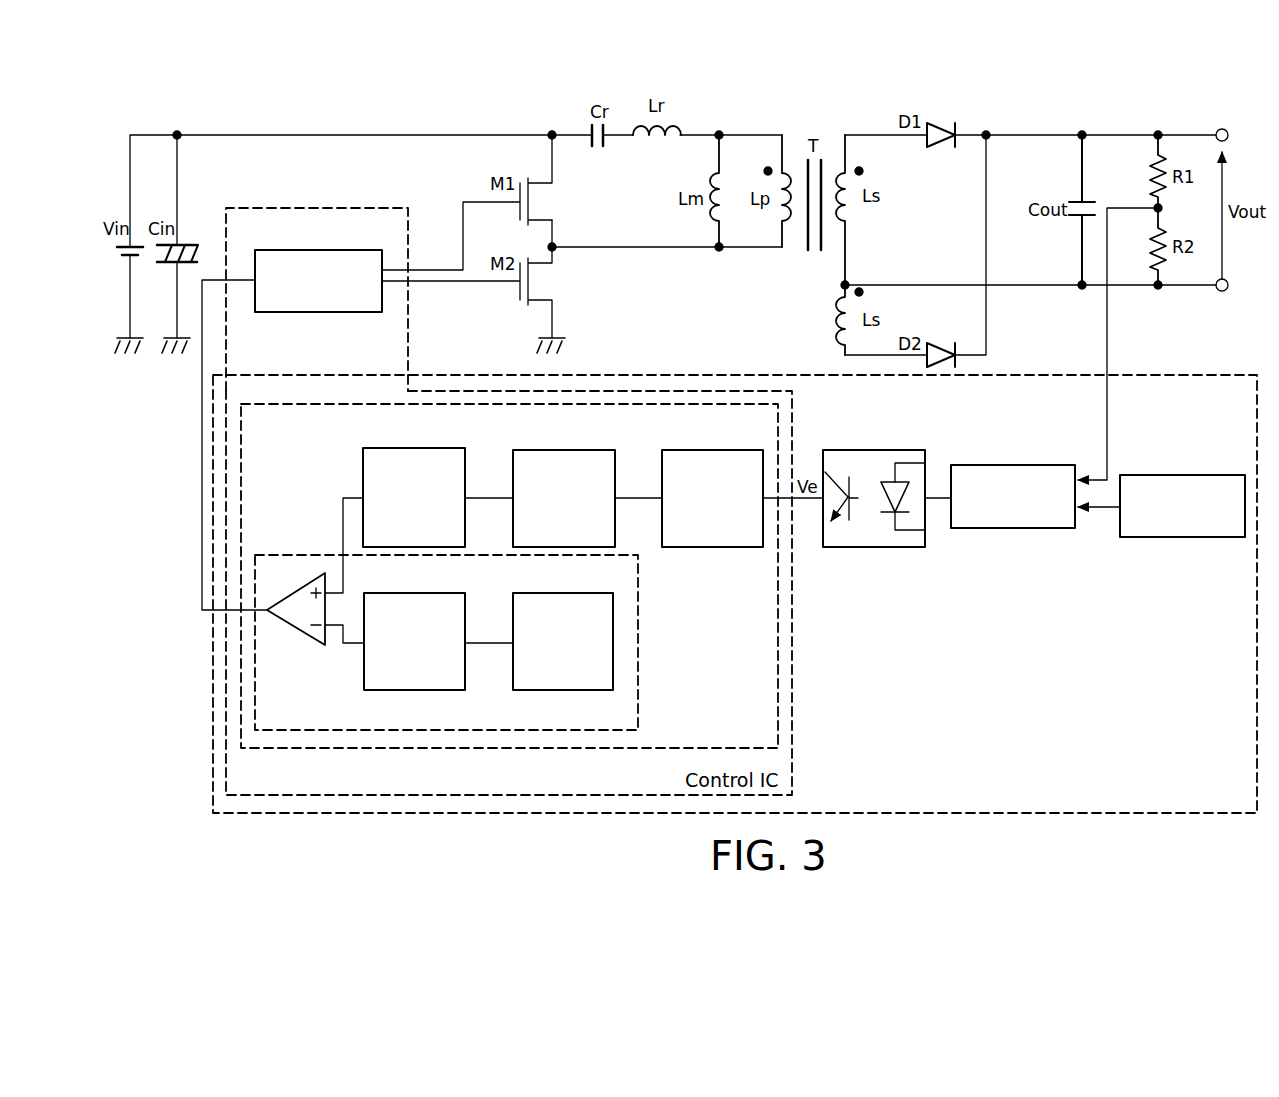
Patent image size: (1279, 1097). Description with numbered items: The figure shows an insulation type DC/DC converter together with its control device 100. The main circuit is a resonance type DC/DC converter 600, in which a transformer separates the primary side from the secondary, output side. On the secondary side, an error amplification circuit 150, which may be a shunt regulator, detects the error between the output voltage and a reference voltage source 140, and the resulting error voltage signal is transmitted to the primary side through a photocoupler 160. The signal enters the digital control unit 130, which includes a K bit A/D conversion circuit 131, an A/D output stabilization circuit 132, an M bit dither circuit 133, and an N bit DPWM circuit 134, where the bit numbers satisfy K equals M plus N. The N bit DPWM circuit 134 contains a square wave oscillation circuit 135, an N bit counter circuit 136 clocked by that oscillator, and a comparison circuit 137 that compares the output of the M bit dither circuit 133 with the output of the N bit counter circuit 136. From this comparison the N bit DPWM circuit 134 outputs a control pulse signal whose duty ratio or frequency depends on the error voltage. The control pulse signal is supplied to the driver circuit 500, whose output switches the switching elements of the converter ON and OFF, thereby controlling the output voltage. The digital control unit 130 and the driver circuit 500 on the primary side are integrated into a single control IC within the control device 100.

The control device 100 is at (1176, 374).
The digital control unit 130 is at (780, 682).
The K bit A/D conversion circuit 131 is at (700, 450).
The A/D output stabilization circuit 132 is at (560, 450).
The M bit dither circuit 133 is at (430, 448).
The N bit DPWM circuit 134 is at (640, 637).
The square wave oscillation circuit 135 is at (560, 593).
The N bit counter circuit 136 is at (430, 593).
The comparison circuit 137 is at (293, 631).
The reference voltage source 140 is at (1175, 475).
The error amplification circuit 150 is at (1005, 465).
The photocoupler 160 is at (860, 450).
The driver circuit 500 is at (301, 250).
The resonance type DC/DC converter 600 is at (842, 106).